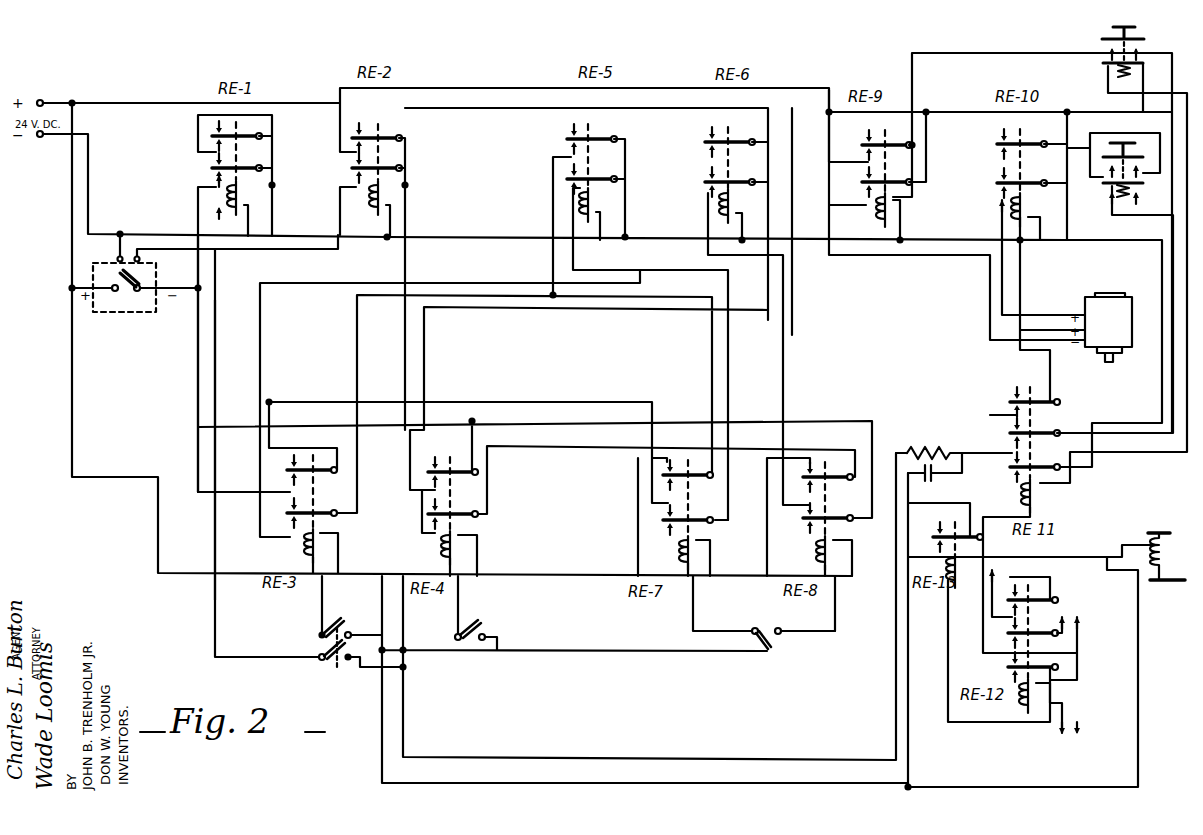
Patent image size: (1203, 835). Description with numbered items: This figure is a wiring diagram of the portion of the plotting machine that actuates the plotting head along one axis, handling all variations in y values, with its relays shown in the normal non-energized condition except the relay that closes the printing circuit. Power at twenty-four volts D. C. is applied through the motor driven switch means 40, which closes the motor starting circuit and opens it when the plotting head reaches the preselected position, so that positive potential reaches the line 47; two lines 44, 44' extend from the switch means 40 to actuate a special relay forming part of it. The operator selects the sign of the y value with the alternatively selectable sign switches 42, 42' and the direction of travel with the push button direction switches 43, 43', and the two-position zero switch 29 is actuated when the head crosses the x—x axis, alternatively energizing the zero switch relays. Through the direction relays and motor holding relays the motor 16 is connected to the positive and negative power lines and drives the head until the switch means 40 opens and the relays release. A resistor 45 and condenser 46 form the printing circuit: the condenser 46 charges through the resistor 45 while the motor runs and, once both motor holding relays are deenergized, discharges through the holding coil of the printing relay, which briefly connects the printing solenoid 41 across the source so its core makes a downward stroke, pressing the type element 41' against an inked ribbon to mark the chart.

The motor 16 is at (1117, 331).
The zero switch 29 is at (777, 645).
The switch means 40 is at (120, 314).
The printing solenoid 41 is at (1149, 541).
The type element 41' is at (1165, 593).
The sign switch 42 is at (361, 632).
The sign switch 42' is at (491, 635).
The direction switch 43 is at (1141, 64).
The direction switch 43' is at (1113, 178).
The line 44 is at (114, 248).
The line 44' is at (231, 450).
The resistor 45 is at (958, 447).
The condenser 46 is at (935, 482).
The line 47 is at (198, 370).